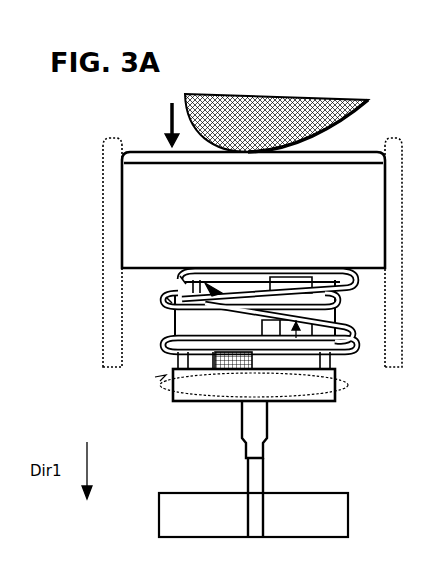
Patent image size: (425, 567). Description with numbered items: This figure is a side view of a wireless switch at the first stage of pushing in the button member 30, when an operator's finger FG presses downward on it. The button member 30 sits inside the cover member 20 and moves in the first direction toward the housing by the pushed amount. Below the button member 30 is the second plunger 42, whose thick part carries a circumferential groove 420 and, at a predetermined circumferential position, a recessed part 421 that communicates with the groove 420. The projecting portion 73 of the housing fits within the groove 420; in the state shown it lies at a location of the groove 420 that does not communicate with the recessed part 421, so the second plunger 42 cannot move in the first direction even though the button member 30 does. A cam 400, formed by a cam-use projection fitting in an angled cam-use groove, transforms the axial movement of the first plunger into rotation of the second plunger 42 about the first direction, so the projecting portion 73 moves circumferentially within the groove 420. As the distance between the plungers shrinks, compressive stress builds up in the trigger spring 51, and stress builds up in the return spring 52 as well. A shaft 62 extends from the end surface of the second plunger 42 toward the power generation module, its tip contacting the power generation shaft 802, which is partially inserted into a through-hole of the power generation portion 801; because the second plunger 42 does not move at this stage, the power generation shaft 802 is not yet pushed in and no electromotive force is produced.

The finger FG is at (320, 99).
The cover member 20 is at (107, 152).
The button member 30 is at (350, 178).
The second plunger 42 is at (185, 333).
The cam 400 is at (187, 286).
The trigger spring 51 is at (178, 283).
The return spring 52 is at (163, 302).
The groove 420 is at (168, 357).
The recessed part 421 is at (318, 350).
The projecting portion 73 is at (226, 361).
The stem 62 is at (252, 418).
The power generation shaft 802 is at (250, 480).
The power generation portion 801 is at (170, 517).